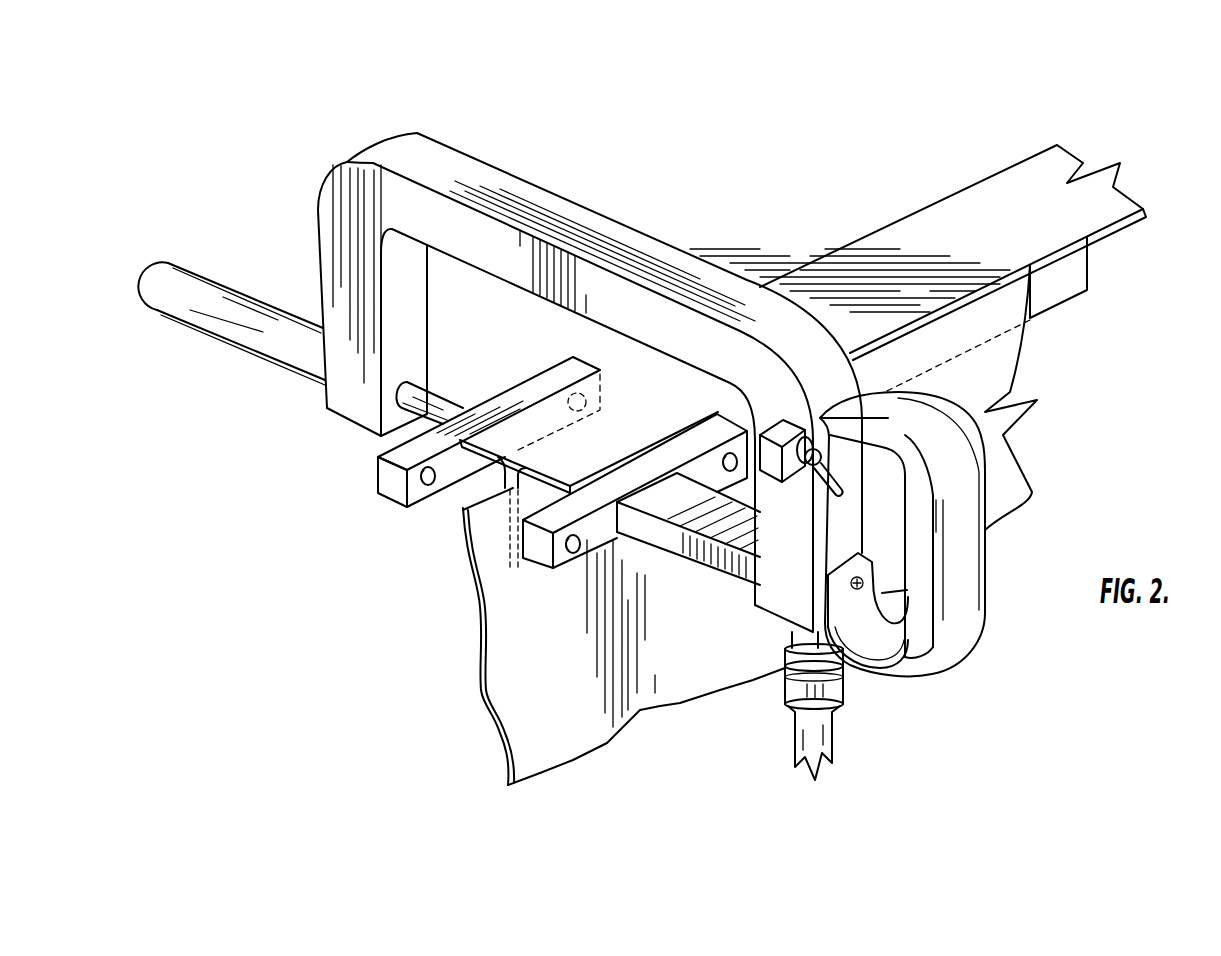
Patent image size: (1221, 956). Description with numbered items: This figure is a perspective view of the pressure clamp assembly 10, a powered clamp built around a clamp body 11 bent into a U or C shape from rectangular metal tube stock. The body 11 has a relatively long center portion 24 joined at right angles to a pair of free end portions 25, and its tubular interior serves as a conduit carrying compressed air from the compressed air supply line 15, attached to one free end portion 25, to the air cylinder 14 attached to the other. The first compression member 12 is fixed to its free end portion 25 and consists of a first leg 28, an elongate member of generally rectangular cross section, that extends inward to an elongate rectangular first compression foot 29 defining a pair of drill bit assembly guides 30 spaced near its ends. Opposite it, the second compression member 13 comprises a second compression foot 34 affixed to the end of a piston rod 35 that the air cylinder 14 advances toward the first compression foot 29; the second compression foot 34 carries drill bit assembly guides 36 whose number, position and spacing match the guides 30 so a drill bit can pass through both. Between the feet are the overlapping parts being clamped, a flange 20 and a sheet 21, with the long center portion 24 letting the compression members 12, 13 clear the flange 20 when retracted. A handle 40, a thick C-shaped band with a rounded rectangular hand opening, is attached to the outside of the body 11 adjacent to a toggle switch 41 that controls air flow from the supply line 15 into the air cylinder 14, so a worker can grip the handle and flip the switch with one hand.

The pressure clamp assembly 10 is at (598, 122).
The clamp body 11 is at (614, 216).
The first compression member 12 is at (700, 555).
The second compression member 13 is at (446, 473).
The air cylinder 14 is at (233, 335).
The compressed air supply line 15 is at (823, 745).
The flange 20 is at (1100, 207).
The sheet 21 is at (1012, 370).
The center portion 24 is at (683, 273).
The free end portions 25 is at (410, 313).
The first leg 28 is at (640, 522).
The first compression foot 29 is at (537, 567).
The drill bit assembly guides 30 is at (728, 463).
The second compression foot 34 is at (385, 466).
The piston rod 35 is at (440, 405).
The drill bit assembly guides 36 is at (432, 478).
The handle 40 is at (970, 553).
The toggle switch 41 is at (825, 453).